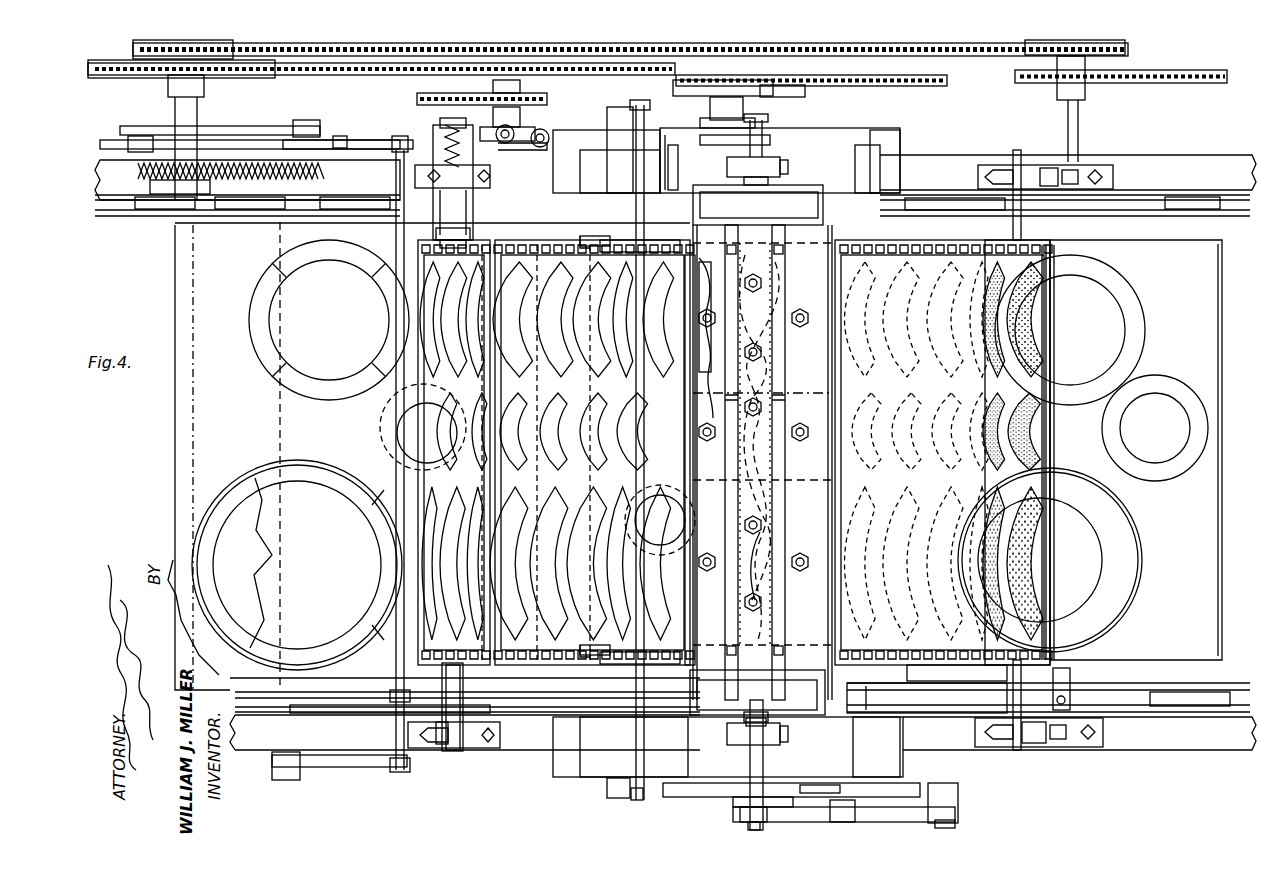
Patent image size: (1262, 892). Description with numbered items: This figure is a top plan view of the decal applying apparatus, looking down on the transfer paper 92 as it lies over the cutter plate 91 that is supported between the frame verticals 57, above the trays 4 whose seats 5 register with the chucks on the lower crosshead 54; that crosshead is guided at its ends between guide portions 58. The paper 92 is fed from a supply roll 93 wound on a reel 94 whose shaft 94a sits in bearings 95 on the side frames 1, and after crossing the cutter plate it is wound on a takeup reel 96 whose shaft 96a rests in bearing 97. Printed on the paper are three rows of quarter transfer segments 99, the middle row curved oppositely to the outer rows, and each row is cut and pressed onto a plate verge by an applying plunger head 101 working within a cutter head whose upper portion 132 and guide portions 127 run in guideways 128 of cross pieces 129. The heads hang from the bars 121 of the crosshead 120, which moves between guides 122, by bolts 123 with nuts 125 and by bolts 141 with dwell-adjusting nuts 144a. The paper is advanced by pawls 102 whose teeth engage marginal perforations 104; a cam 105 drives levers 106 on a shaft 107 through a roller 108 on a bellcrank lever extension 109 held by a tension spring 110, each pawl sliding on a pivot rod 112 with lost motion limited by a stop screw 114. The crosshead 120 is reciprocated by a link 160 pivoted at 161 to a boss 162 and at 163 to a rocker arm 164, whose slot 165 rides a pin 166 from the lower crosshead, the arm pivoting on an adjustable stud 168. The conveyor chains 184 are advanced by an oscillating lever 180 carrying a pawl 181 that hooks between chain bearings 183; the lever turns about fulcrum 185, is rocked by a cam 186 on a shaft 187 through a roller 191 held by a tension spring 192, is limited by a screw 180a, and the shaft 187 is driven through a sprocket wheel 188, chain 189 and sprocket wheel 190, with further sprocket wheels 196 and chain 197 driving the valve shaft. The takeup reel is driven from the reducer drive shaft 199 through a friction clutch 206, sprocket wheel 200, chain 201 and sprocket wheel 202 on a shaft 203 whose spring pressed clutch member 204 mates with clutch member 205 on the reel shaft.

The side frame 1 is at (1190, 162).
The tray 4 is at (200, 290).
The seat 5 is at (240, 492).
The lower crosshead 54 is at (865, 680).
The frame vertical 57 is at (860, 130).
The guide portion 58 is at (590, 168).
The cutter plate 91 is at (810, 245).
The transfer paper 92 is at (925, 248).
The supply roll 93 is at (1000, 250).
The reel 94 is at (1052, 250).
The reel shaft 94a is at (1018, 160).
The bearing 95 is at (1000, 168).
The takeup reel 96 is at (415, 178).
The reel shaft 96a is at (425, 245).
The bearing 97 is at (445, 745).
The transfer segment 99 is at (1000, 335).
The applying plunger head 101 is at (756, 462).
The pawl 102 is at (660, 252).
The marginal perforation 104 is at (900, 248).
The cam 105 is at (755, 120).
The lever 106 is at (622, 108).
The shaft 107 is at (630, 140).
The roller 108 is at (700, 110).
The bellcrank lever extension 109 is at (672, 136).
The tension spring 110 is at (676, 160).
The pivot rod 112 is at (620, 171).
The stop screw 114 is at (600, 238).
The crosshead 120 is at (880, 135).
The bar 121 is at (757, 692).
The guide 122 is at (785, 160).
The bolt 123 is at (805, 306).
The nut 125 is at (756, 444).
The guide portion 127 is at (700, 340).
The guideway 128 is at (690, 470).
The cross piece 129 is at (660, 485).
The upper portion of cutter head 132 is at (703, 341).
The bolt 141 is at (755, 275).
The nut 144a is at (765, 533).
The link 160 is at (878, 808).
The pivot 161 is at (765, 190).
The boss 162 is at (745, 188).
The pivot 163 is at (955, 828).
The rocker arm 164 is at (785, 803).
The slot 165 is at (791, 801).
The pin 166 is at (727, 812).
The stud 168 is at (838, 810).
The oscillating lever 180 is at (410, 120).
The screw 180a is at (140, 160).
The pawl 181 is at (440, 215).
The bearing 183 is at (155, 215).
The chain 184 is at (118, 215).
The fulcrum 185 is at (280, 248).
The cam 186 is at (230, 127).
The shaft 187 is at (170, 105).
The sprocket wheel 188 is at (268, 58).
The chain 189 is at (381, 78).
The sprocket wheel 190 is at (760, 78).
The roller 191 is at (335, 115).
The tension spring 192 is at (256, 157).
The sprocket wheel 196 is at (795, 97).
The sprocket chain 197 is at (1017, 77).
The drive shaft 199 is at (470, 185).
The sprocket wheel 200 is at (540, 100).
The sprocket chain 201 is at (486, 101).
The sprocket wheel 202 is at (465, 97).
The shaft 203 is at (425, 118).
The spring pressed clutch member 204 is at (468, 208).
The clutch member 205 is at (440, 228).
The friction clutch 206 is at (540, 120).